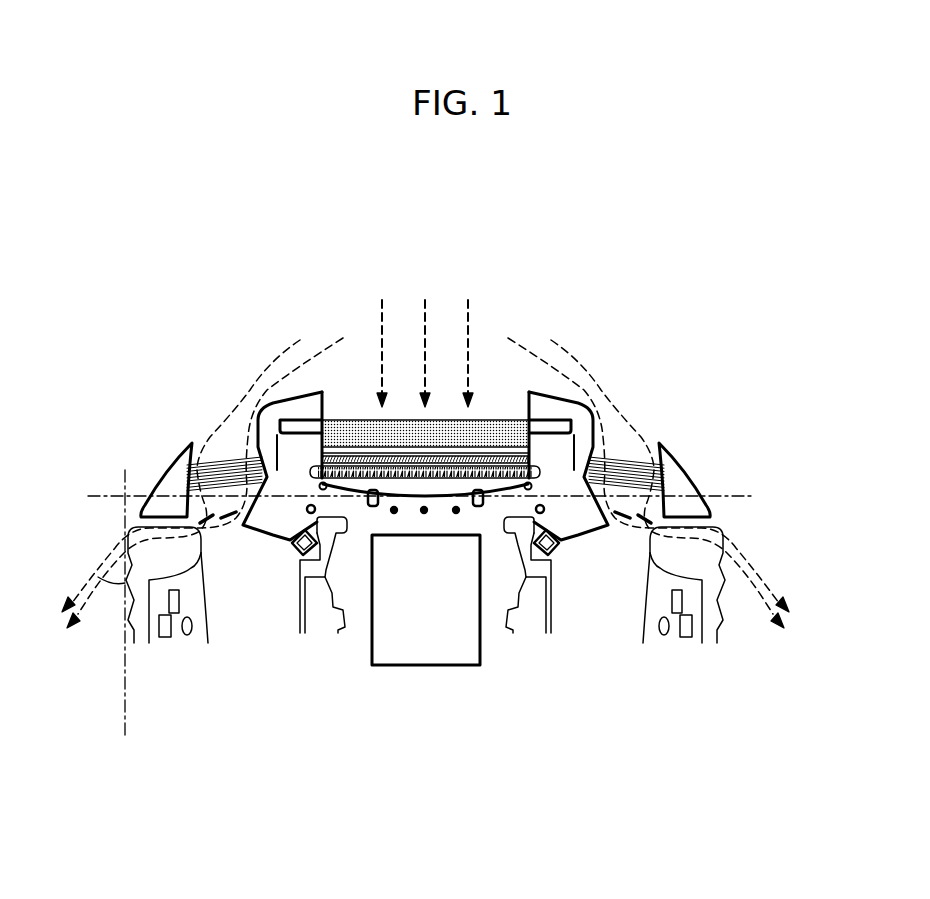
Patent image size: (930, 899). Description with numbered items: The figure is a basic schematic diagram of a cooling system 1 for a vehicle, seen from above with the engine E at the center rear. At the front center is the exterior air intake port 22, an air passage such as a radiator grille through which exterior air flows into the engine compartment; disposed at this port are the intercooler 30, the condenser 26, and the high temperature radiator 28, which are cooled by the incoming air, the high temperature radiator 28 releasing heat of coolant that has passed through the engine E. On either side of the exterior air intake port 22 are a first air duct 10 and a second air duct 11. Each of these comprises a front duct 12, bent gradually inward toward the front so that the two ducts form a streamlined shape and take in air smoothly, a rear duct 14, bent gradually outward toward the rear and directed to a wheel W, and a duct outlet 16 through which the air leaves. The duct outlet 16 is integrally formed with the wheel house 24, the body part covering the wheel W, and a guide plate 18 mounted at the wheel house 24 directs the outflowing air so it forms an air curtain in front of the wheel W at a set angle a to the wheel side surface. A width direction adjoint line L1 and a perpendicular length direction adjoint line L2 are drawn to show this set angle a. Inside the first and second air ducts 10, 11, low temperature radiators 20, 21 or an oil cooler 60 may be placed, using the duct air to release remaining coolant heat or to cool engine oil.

The cooling system 1 is at (640, 360).
The first air duct 10 is at (268, 507).
The second air duct 11 is at (592, 517).
The front duct 12 is at (224, 454).
The rear duct 14 is at (223, 506).
The duct outlet 16 is at (655, 510).
The guide plate 18 is at (645, 530).
The low temperature radiator 20 is at (187, 480).
The low temperature radiator 21 is at (667, 440).
The exterior air intake port 22 is at (412, 401).
The wheel house 24 is at (150, 507).
The condenser 26 is at (488, 470).
The high temperature radiator 28 is at (362, 470).
The intercooler 30 is at (443, 435).
The oil cooler 60 is at (432, 447).
The engine E is at (383, 658).
The wheel W is at (645, 655).
The width direction adjoint line L1 is at (437, 494).
The length direction adjoint line L2 is at (123, 619).
The set angle a is at (111, 589).